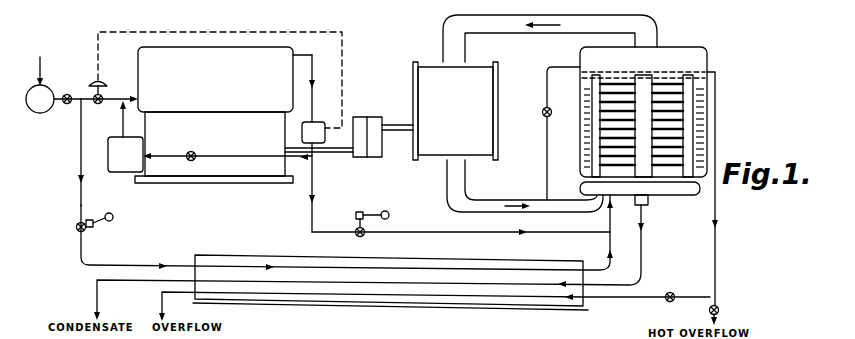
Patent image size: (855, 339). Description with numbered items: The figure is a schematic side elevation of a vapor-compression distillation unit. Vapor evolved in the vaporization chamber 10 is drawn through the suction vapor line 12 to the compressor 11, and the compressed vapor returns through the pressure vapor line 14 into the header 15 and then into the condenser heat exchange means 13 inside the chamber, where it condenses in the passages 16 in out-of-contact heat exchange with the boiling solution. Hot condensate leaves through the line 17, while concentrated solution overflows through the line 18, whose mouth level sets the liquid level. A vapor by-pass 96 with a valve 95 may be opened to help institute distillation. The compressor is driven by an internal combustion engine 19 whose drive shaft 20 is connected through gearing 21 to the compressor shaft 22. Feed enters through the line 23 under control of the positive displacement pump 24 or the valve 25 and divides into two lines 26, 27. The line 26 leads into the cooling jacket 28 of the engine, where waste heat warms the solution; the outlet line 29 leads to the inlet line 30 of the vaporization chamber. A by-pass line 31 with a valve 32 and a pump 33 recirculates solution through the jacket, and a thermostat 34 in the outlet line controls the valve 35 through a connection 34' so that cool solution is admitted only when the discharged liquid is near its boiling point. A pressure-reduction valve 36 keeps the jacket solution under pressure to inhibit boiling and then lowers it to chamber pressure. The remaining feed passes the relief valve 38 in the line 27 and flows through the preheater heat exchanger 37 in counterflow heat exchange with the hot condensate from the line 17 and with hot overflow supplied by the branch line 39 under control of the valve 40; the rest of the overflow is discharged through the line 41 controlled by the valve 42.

The vaporization chamber 10 is at (707, 65).
The compressor 11 is at (484, 130).
The suction vapor line 12 is at (652, 21).
The condenser heat exchange means 13 is at (690, 90).
The pressure vapor line 14 is at (465, 176).
The header 15 is at (582, 187).
The passages 16 is at (672, 118).
The condensate line 17 is at (98, 299).
The overflow line 18 is at (716, 242).
The internal combustion engine 19 is at (214, 147).
The drive shaft 20 is at (341, 152).
The gearing 21 is at (366, 120).
The compressor shaft 22 is at (395, 124).
The feed line 23 is at (43, 58).
The positive displacement pump 24 is at (40, 113).
The valve 25 is at (67, 93).
The line 26 is at (109, 96).
The line 27 is at (80, 206).
The cooling jacket 28 is at (138, 60).
The outlet line 29 is at (313, 71).
The inlet line 30 is at (610, 222).
The by-pass line 31 is at (266, 162).
The valve 32 is at (190, 162).
The pump 33 is at (118, 173).
The thermostat 34 is at (319, 118).
The connection 34' is at (220, 70).
The valve 35 is at (98, 104).
The pressure-reduction valve 36 is at (373, 229).
The preheater heat exchanger 37 is at (246, 262).
The relief valve 38 is at (79, 231).
The branch line 39 is at (164, 309).
The valve 40 is at (681, 285).
The line 41 is at (719, 319).
The valve 42 is at (720, 308).
The valve 95 is at (549, 119).
The vapor by-pass 96 is at (547, 93).